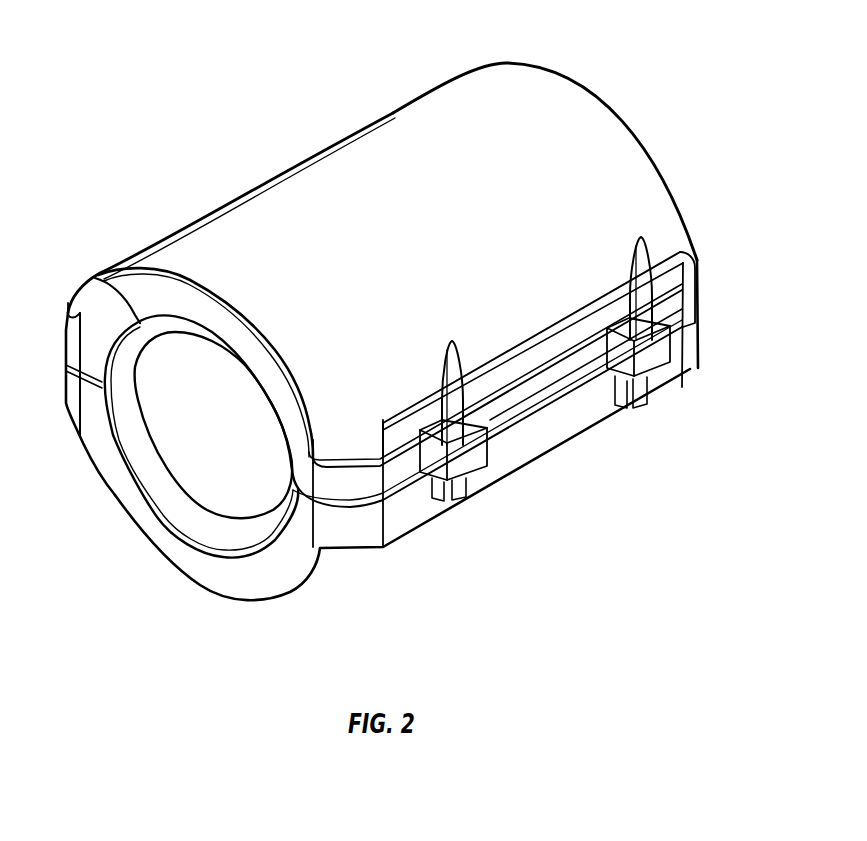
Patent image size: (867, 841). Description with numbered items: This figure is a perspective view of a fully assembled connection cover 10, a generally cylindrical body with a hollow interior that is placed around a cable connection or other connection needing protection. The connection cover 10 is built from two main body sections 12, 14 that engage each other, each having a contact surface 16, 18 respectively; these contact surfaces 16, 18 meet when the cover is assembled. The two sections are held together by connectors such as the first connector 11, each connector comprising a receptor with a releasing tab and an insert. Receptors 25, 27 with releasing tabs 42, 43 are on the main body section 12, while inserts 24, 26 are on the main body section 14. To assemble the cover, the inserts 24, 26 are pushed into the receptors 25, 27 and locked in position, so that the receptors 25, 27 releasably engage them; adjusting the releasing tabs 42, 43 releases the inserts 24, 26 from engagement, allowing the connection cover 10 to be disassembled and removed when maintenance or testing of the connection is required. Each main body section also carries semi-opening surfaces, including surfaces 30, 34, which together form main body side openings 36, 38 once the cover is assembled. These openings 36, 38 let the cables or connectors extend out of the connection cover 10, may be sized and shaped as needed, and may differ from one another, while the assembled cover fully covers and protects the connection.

The connection cover 10 is at (655, 40).
The first connector 11 is at (718, 256).
The main body section 12 is at (158, 258).
The main body section 14 is at (255, 602).
The contact surface 16 is at (307, 417).
The contact surface 18 is at (82, 438).
The insert 24 is at (443, 367).
The receptor 25 is at (493, 455).
The insert 26 is at (627, 262).
The receptor 27 is at (672, 350).
The semi-opening surface 30 is at (97, 277).
The semi-opening surface 34 is at (150, 500).
The main body side opening 36 is at (623, 123).
The main body side opening 38 is at (213, 462).
The releasing tab 42 is at (650, 312).
The releasing tab 43 is at (470, 430).